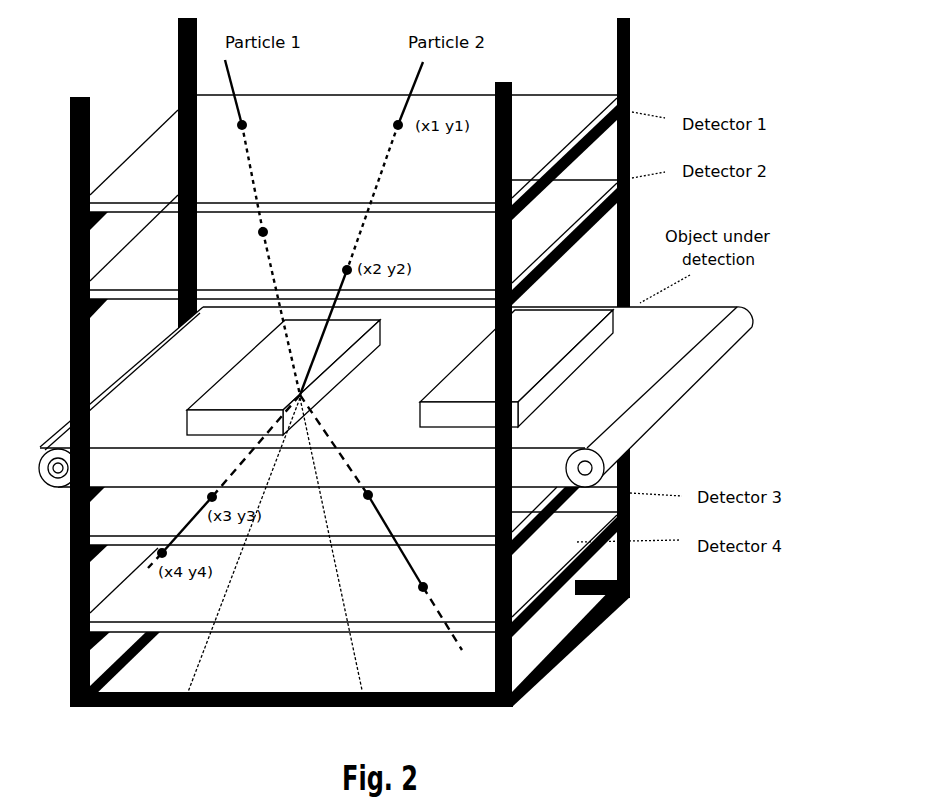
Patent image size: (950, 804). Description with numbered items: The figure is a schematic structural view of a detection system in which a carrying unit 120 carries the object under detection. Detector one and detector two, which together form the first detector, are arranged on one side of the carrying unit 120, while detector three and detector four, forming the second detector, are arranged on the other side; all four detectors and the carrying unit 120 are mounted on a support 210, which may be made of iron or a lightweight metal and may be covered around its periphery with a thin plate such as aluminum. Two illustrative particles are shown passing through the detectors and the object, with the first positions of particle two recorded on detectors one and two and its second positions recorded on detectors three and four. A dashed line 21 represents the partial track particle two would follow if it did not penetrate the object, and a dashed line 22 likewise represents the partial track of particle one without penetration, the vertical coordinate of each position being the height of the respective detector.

The support 210 is at (632, 63).
The carrying unit 120 is at (645, 442).
The dashed line 21 is at (200, 657).
The dashed line 22 is at (355, 657).